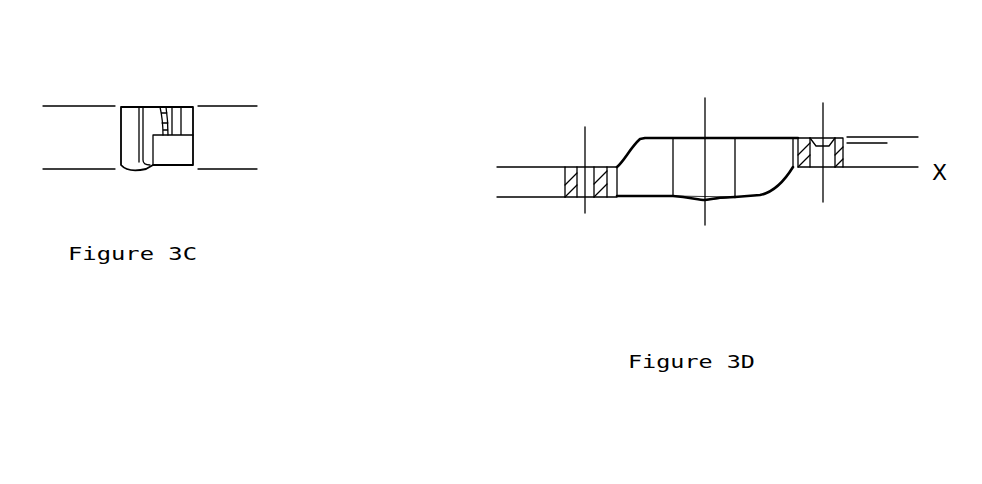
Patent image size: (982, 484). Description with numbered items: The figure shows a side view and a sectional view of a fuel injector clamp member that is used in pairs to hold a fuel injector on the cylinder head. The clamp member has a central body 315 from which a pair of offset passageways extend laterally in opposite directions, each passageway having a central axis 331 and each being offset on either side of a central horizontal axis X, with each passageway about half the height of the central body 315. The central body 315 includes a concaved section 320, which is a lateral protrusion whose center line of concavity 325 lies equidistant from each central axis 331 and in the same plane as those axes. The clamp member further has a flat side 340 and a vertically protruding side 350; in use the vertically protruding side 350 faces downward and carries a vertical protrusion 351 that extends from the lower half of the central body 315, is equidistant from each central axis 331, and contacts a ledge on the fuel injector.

The central body 315 is at (652, 152).
The concaved section 320 is at (705, 158).
The flat side 340 is at (767, 137).
The central axis 331 is at (583, 220).
The vertical protrusion 351 is at (690, 202).
The center line of concavity 325 is at (705, 225).
The vertically protruding side 350 is at (736, 232).